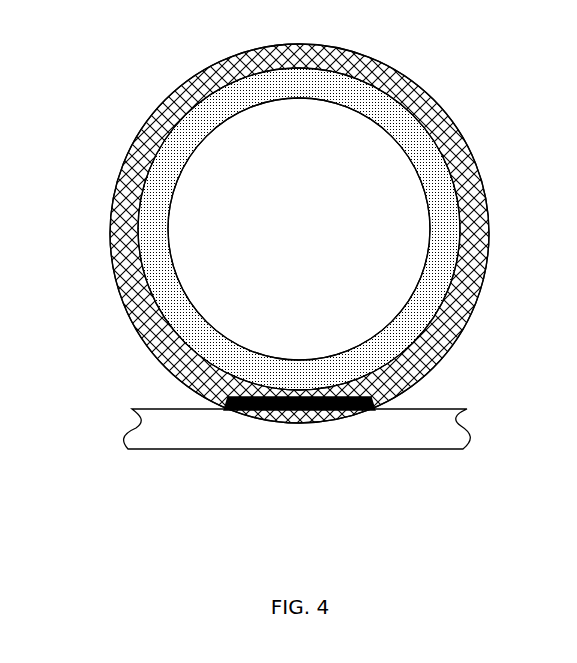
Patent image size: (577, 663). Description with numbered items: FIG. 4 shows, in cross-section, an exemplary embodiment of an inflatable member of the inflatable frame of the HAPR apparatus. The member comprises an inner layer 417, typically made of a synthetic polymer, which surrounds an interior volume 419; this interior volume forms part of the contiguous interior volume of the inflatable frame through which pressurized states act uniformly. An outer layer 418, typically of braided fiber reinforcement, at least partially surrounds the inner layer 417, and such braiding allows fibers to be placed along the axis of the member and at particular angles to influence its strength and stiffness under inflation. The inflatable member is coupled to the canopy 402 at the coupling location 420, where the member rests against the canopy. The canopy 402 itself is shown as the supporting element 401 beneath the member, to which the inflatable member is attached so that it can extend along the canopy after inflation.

The canopy 402 is at (443, 71).
The inner layer 417 is at (450, 205).
The outer layer 418 is at (455, 132).
The interior volume 419 is at (323, 248).
The coupling location 420 is at (374, 400).
The substrate 401 is at (286, 446).